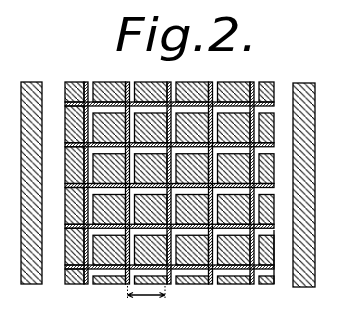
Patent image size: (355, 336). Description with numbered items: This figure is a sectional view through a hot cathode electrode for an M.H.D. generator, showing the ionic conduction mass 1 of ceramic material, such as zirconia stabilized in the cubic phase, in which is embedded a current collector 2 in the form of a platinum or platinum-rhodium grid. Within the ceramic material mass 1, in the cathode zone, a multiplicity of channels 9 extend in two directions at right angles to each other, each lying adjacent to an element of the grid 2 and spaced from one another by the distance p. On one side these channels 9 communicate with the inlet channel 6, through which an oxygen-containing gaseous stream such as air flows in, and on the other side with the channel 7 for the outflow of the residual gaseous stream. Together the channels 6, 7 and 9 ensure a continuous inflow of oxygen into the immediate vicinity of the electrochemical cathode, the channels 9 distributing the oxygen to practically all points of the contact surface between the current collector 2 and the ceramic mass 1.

The ionic conduction mass 1 is at (294, 88).
The current collector 2 is at (210, 106).
The channel for the inflow of the oxygen containing gaseous stream 6 is at (53, 107).
The channel for the outflow of the residual gaseous stream 7 is at (280, 268).
The channels 9 is at (90, 100).
The distance between channels p is at (147, 303).